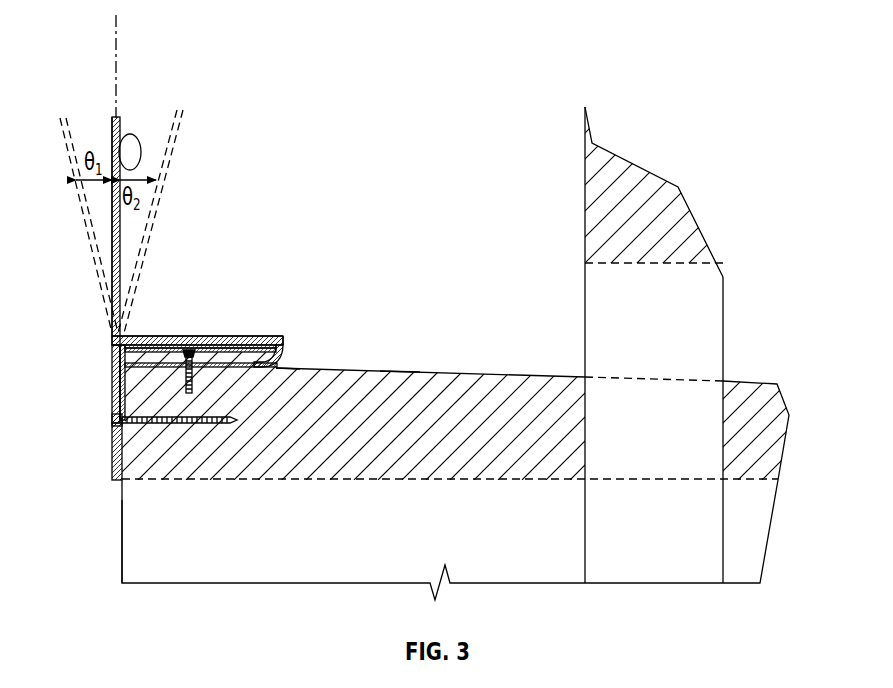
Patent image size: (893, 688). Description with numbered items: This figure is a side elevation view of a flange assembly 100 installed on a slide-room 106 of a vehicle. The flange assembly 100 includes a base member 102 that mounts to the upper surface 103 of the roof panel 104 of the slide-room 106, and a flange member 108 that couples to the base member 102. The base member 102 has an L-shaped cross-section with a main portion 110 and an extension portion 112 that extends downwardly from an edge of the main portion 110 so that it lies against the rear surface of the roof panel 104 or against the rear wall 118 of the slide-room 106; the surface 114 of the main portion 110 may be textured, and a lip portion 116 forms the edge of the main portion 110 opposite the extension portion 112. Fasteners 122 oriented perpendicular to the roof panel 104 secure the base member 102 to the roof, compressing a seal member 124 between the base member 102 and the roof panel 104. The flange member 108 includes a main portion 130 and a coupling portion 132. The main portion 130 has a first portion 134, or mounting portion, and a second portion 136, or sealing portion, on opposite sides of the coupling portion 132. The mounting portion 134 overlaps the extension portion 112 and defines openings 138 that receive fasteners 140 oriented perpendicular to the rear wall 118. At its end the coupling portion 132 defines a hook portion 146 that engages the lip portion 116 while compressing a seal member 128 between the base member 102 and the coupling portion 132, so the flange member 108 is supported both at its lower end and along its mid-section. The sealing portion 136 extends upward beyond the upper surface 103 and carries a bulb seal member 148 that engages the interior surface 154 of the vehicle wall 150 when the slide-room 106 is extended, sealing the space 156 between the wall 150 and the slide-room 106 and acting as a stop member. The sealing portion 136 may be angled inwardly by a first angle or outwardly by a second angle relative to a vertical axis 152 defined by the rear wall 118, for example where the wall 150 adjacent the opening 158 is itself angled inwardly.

The flange assembly 100 is at (314, 126).
The base member 102 is at (184, 348).
The upper surface 103 is at (399, 366).
The roof panel 104 is at (470, 376).
The slide-room 106 is at (450, 540).
The flange member 108 is at (111, 337).
The main portion 110 is at (243, 350).
The extension portion 112 is at (111, 389).
The surface 114 is at (147, 336).
The lip portion 116 is at (286, 342).
The rear wall 118 is at (121, 542).
The fasteners 122 is at (178, 374).
The seal member 124 is at (205, 367).
The seal member 128 is at (200, 345).
The main portion 130 is at (111, 359).
The coupling portion 132 is at (277, 332).
The first portion 134 is at (111, 402).
The second portion 136 is at (66, 116).
The openings 138 is at (112, 456).
The fasteners 140 is at (184, 427).
The hook portion 146 is at (291, 351).
The seal member 148 is at (137, 135).
The wall 150 is at (724, 332).
The vertical axis 152 is at (118, 40).
The interior surface 154 is at (585, 190).
The space 156 is at (654, 345).
The opening 158 is at (600, 262).